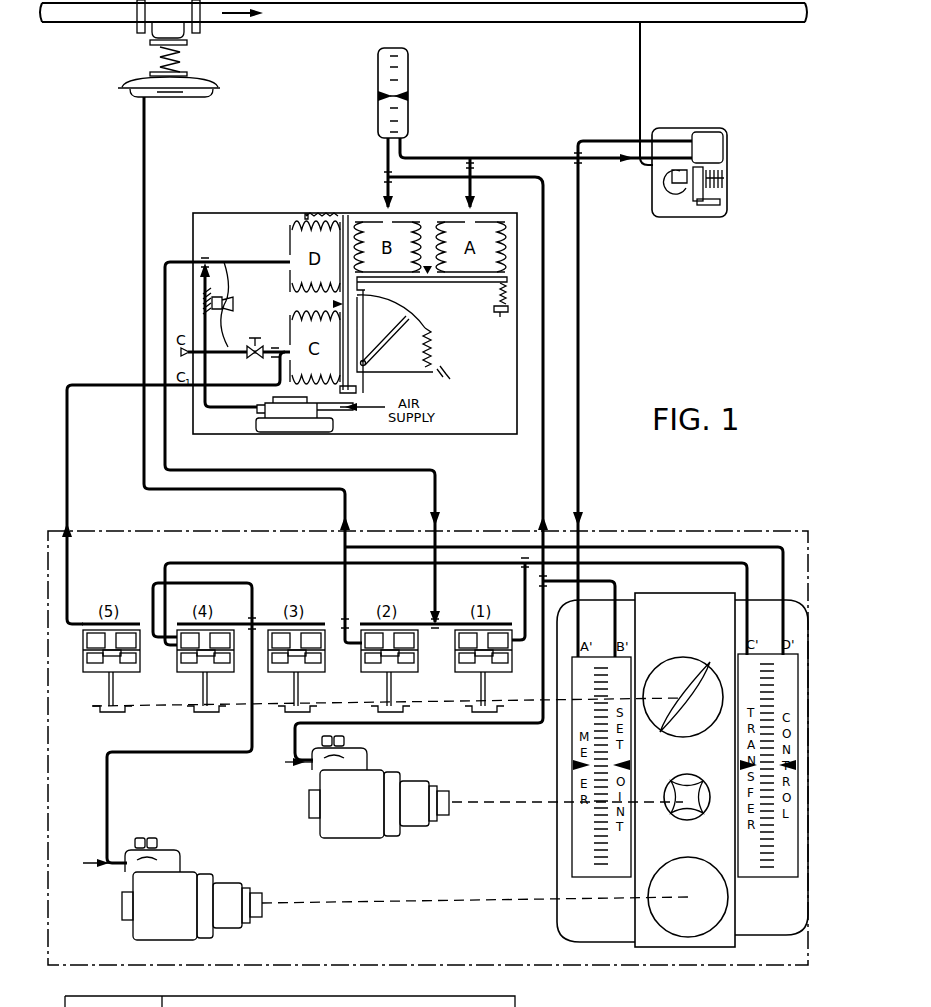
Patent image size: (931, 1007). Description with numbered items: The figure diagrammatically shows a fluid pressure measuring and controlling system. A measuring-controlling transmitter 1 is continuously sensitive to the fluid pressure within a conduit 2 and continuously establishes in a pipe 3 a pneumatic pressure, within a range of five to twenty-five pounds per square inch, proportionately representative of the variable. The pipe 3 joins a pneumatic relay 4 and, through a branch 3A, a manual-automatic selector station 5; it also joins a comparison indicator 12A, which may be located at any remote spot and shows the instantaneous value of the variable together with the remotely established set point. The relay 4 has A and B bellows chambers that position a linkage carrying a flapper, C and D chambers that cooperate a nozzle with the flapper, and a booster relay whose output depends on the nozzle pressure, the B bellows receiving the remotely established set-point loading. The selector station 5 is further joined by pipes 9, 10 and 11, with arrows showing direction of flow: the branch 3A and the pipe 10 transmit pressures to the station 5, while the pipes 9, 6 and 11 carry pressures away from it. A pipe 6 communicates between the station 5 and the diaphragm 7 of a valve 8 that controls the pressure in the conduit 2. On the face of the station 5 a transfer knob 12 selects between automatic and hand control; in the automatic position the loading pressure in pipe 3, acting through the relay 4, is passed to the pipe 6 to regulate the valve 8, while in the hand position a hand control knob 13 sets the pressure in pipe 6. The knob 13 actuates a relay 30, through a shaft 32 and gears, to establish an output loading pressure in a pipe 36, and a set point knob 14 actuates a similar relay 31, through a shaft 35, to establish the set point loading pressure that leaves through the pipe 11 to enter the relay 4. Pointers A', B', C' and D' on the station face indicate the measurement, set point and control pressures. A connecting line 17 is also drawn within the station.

The measuring-controlling transmitter 1 is at (727, 152).
The conduit 2 is at (522, 24).
The pipe 3 is at (508, 158).
The pipe branch 3A is at (580, 490).
The pneumatic relay 4 is at (420, 350).
The manual-automatic selector station 5 is at (656, 531).
The pipe 6 is at (146, 181).
The diaphragm 7 is at (118, 89).
The valve 8 is at (214, 59).
The pipe 9 is at (70, 494).
The pipe 10 is at (438, 520).
The pipe 11 is at (540, 493).
The transfer knob 12 is at (690, 656).
The comparison indicator 12A is at (409, 54).
The hand control knob 13 is at (672, 861).
The set point knob 14 is at (698, 778).
The connecting line 17 is at (340, 548).
The relay 30 is at (197, 870).
The relay 31 is at (398, 770).
The shaft 32 is at (515, 898).
The shaft 35 is at (545, 801).
The pipe 36 is at (178, 753).